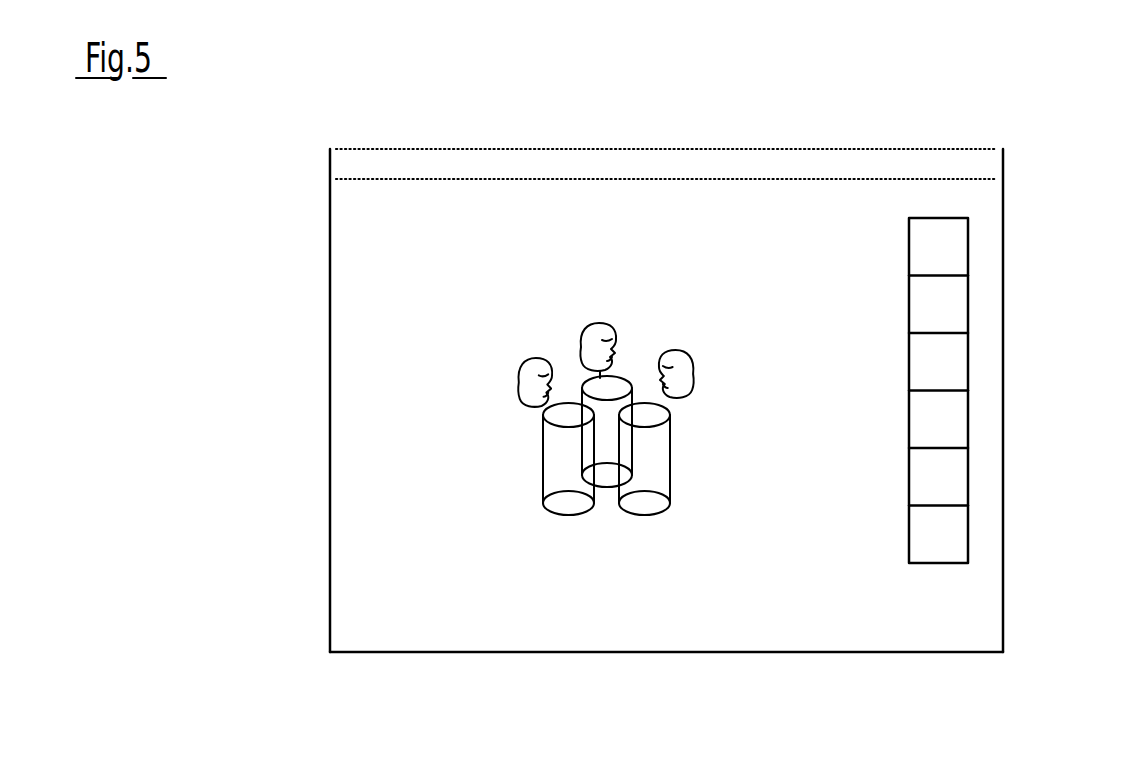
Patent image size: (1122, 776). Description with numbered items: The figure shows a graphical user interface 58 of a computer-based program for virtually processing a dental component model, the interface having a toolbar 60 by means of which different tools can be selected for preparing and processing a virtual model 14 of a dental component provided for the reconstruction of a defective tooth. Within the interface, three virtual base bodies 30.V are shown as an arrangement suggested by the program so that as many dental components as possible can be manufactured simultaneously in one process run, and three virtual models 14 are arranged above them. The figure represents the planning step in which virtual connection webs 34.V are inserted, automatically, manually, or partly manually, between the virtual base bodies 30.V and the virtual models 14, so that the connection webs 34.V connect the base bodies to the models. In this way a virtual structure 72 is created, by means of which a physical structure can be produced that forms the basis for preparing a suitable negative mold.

The graphical user interface 58 is at (343, 160).
The toolbar 60 is at (953, 303).
The virtual structure 72 is at (507, 479).
The virtual base bodies 30.V is at (643, 507).
The virtual connection webs 34.V is at (580, 372).
The virtual model 14 is at (681, 366).